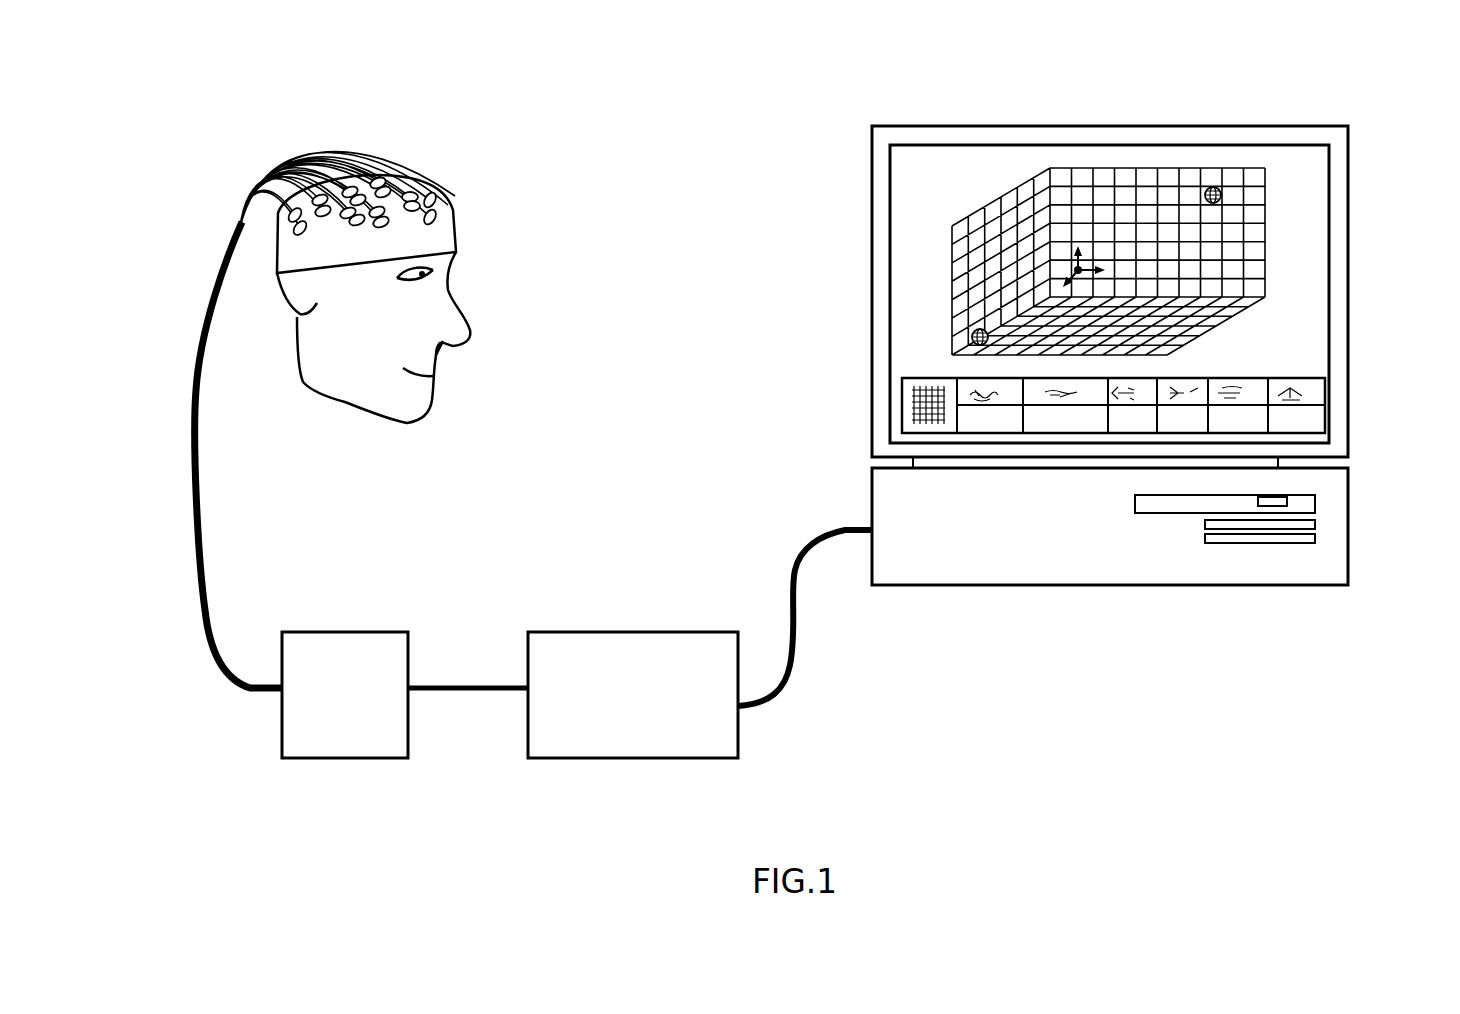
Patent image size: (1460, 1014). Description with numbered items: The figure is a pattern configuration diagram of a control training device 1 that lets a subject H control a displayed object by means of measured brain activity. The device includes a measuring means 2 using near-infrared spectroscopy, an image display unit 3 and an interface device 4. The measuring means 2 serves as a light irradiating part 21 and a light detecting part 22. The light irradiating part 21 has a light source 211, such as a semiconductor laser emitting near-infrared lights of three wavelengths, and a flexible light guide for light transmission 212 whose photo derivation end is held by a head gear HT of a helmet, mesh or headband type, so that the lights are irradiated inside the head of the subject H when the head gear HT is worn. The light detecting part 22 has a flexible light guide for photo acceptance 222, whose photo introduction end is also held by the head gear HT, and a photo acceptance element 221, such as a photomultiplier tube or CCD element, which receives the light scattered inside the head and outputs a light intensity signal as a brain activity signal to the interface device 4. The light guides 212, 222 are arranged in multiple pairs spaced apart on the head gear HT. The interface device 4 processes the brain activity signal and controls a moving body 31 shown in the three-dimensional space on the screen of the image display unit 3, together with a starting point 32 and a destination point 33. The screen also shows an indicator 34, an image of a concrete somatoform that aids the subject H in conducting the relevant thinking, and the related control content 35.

The control training device 1 is at (907, 775).
The measuring means 2 is at (323, 431).
The image display unit 3 is at (1119, 311).
The interface device 4 is at (615, 631).
The light irradiating part 21 is at (196, 455).
The light detecting part 22 is at (150, 380).
The light source 211 is at (379, 656).
The photo acceptance element 221 is at (350, 631).
The flexible light guide for light transmission 212 is at (347, 148).
The flexible light guide for photo acceptance 222 is at (297, 137).
The moving body 31 is at (1075, 266).
The starting point 32 is at (972, 338).
The destination point 33 is at (1227, 199).
The indicator 34 is at (1320, 380).
The control content 35 is at (1323, 410).
The subject H is at (462, 286).
The head gear HT is at (452, 199).